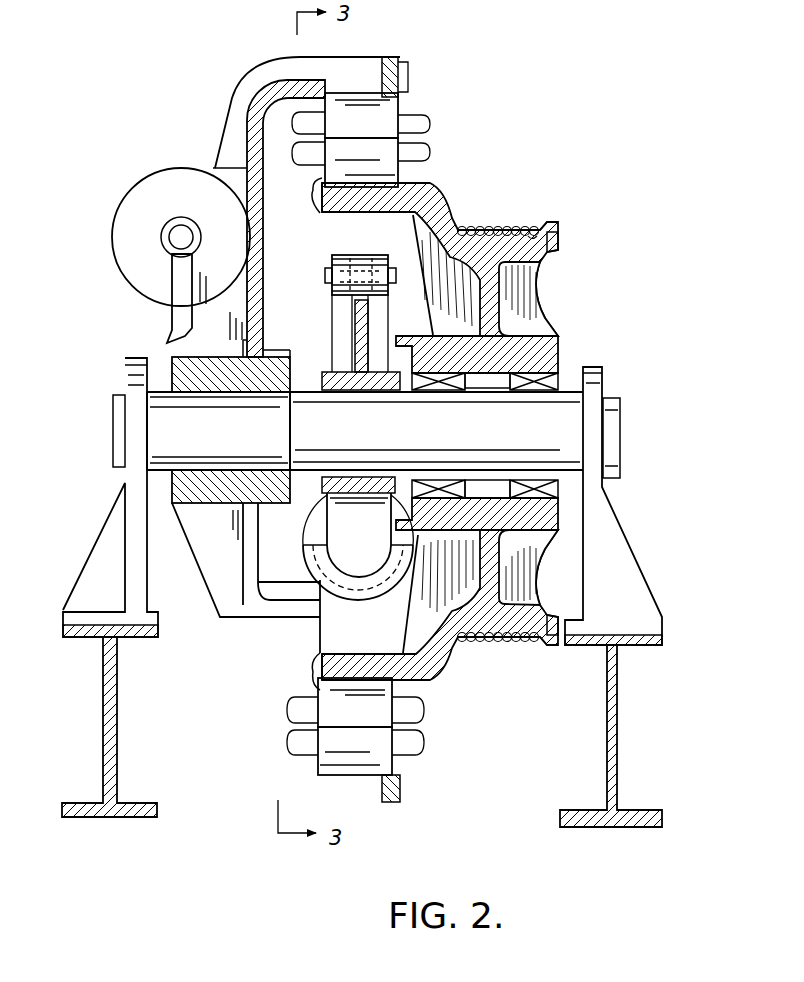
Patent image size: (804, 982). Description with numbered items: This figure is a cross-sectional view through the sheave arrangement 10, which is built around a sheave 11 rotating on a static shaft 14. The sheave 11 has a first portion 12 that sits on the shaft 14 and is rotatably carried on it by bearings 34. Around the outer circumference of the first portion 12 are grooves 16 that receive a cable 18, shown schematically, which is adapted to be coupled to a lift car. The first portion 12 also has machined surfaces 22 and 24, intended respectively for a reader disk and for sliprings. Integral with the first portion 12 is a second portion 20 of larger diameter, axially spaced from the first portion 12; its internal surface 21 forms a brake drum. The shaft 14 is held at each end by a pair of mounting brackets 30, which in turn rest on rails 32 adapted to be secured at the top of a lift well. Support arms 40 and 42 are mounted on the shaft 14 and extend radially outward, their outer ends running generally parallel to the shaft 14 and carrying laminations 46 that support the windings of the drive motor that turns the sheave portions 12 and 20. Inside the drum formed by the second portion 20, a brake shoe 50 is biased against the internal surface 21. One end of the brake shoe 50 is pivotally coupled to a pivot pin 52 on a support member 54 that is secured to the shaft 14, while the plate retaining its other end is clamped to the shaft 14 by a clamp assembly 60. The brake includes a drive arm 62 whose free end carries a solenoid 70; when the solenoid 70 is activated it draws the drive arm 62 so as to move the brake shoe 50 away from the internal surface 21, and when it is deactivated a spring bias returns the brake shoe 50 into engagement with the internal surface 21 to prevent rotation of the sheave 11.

The sheave arrangement 10 is at (552, 150).
The sheave 11 is at (574, 359).
The first portion 12 is at (556, 222).
The static shaft 14 is at (350, 437).
The grooves 16 is at (531, 228).
The cable 18 is at (497, 226).
The second portion 20 is at (430, 185).
The internal surface 21 is at (330, 217).
The surface 22 is at (558, 249).
The surface 24 is at (547, 292).
The mounting brackets 30 is at (137, 532).
The rails 32 is at (110, 678).
The bearings 34 is at (442, 388).
The support arm 40 is at (250, 118).
The support arm 42 is at (232, 606).
The laminations 46 is at (393, 172).
The brake shoe 50 is at (340, 256).
The pivot pin 52 is at (328, 278).
The support member 54 is at (348, 337).
The clamp assembly 60 is at (342, 605).
The drive arm 62 is at (170, 332).
The solenoid 70 is at (156, 203).